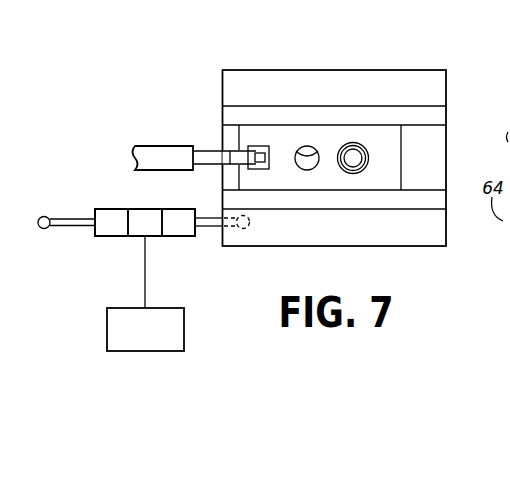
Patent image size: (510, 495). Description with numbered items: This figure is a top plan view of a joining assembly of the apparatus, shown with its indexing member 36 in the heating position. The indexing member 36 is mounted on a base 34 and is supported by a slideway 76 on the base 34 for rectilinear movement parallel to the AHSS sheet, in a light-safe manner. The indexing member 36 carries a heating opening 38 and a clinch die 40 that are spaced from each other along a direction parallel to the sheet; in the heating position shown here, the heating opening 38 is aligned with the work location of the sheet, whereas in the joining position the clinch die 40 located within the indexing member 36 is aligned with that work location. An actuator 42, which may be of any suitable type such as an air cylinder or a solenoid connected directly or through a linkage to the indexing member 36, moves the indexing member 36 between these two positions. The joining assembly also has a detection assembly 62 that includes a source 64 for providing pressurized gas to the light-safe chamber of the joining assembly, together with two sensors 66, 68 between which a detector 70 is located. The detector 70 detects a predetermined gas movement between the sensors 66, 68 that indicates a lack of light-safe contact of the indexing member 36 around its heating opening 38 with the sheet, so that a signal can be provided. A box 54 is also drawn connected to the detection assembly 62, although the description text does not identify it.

The base 34 is at (437, 68).
The indexing member 36 is at (327, 138).
The heating opening 38 is at (295, 150).
The clinch die 40 is at (367, 148).
The actuator 42 is at (168, 145).
The controller 54 is at (136, 340).
The detection assembly 62 is at (139, 194).
The source 64 is at (38, 221).
The sensor 66 is at (112, 238).
The sensor 68 is at (177, 238).
The detector 70 is at (135, 210).
The slideway 76 is at (261, 106).